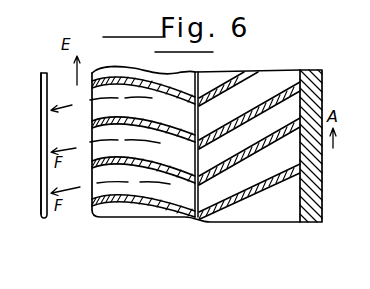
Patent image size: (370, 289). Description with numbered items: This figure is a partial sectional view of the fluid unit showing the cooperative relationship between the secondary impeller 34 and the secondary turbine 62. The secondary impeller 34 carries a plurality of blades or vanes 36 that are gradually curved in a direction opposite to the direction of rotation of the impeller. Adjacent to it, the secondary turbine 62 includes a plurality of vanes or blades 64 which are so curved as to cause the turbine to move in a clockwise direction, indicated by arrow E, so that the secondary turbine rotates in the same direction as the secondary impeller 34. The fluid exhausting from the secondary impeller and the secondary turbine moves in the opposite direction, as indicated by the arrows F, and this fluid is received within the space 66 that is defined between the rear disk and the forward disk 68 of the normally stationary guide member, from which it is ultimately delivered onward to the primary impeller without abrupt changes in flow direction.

The secondary impeller 34 is at (319, 97).
The blades or vanes 36 is at (276, 88).
The secondary turbine 62 is at (181, 207).
The vanes or blades 64 is at (137, 201).
The space 66 is at (69, 218).
The forward disk 68 is at (41, 122).